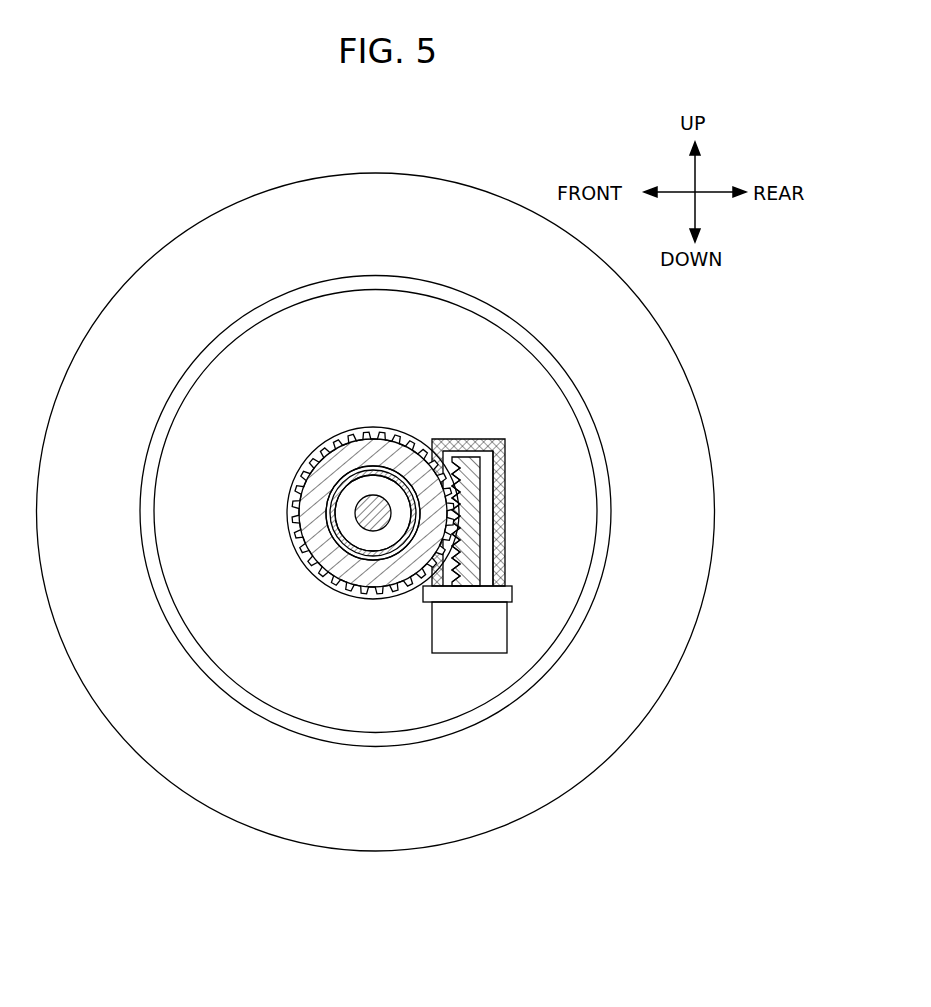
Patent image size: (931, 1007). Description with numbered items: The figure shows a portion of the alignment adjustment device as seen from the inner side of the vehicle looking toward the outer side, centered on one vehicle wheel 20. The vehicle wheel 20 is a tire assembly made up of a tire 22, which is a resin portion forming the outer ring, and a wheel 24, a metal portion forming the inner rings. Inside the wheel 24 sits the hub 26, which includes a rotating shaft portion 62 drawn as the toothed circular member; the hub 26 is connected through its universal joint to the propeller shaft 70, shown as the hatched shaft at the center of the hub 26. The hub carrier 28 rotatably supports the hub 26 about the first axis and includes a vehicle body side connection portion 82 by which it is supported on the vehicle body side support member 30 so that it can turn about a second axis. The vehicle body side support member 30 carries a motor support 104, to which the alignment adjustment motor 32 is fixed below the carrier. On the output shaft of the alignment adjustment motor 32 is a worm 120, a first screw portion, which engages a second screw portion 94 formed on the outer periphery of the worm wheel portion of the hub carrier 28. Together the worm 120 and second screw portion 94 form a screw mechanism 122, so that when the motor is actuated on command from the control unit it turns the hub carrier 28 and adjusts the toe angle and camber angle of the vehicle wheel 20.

The vehicle wheel 20 is at (376, 519).
The tire 22 is at (603, 737).
The wheel 24 is at (512, 670).
The hub 26 is at (344, 490).
The rotating shaft portion 62 is at (344, 490).
The hub carrier 28 is at (379, 490).
The vehicle body side connection portion 82 is at (416, 446).
The vehicle body side support member 30 is at (535, 498).
The alignment adjustment motor 32 is at (438, 632).
The propeller shaft 70 is at (373, 500).
The second screw portion 94 is at (478, 536).
The motor support 104 is at (506, 464).
The worm 120 is at (462, 512).
The screw mechanism 122 is at (526, 521).